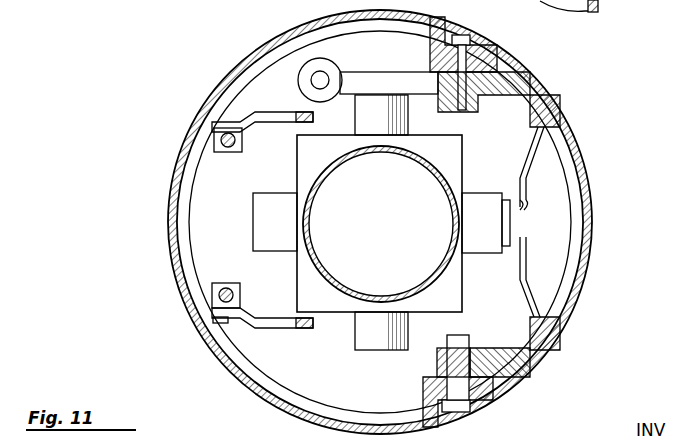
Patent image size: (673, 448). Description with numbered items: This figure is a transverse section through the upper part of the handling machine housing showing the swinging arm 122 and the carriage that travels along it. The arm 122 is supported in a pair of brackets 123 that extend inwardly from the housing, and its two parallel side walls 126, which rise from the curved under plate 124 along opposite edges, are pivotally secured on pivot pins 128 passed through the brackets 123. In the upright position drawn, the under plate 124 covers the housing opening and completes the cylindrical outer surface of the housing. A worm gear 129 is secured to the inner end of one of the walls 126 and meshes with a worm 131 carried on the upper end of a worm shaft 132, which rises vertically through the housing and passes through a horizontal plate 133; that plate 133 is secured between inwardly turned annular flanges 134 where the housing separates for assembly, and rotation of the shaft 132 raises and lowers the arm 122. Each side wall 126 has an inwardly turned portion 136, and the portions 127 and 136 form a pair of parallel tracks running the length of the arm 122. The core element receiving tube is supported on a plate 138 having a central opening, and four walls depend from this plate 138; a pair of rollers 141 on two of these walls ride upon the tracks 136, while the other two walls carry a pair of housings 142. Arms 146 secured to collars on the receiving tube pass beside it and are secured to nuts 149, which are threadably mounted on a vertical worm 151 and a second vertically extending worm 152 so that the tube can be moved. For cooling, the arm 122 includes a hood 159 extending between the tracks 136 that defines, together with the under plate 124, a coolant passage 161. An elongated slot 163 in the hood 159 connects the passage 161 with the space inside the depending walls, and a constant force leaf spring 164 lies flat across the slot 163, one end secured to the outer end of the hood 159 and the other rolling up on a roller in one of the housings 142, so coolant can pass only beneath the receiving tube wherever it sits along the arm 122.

The arm 122 is at (594, 232).
The brackets 123 is at (488, 60).
The under plate 124 is at (576, 300).
The side walls 126 is at (530, 90).
The portions 127 is at (472, 107).
The pivot pins 128 is at (470, 32).
The worm gear 129 is at (370, 72).
The worm 131 is at (320, 90).
The worm shaft 132 is at (312, 84).
The horizontal plate 133 is at (232, 110).
The annular flanges 134 is at (256, 68).
The inwardly turned portion 136 is at (562, 118).
The plate 138 is at (338, 300).
The rollers 141 is at (400, 95).
The housings 142 is at (278, 245).
The arms 146 is at (262, 122).
The nuts 149 is at (214, 132).
The vertical worm 151 is at (214, 298).
The vertically extending worm 152 is at (226, 153).
The hood 159 is at (522, 182).
The coolant passage 161 is at (568, 230).
The elongated slot 163 is at (516, 192).
The constant force leaf spring 164 is at (490, 236).